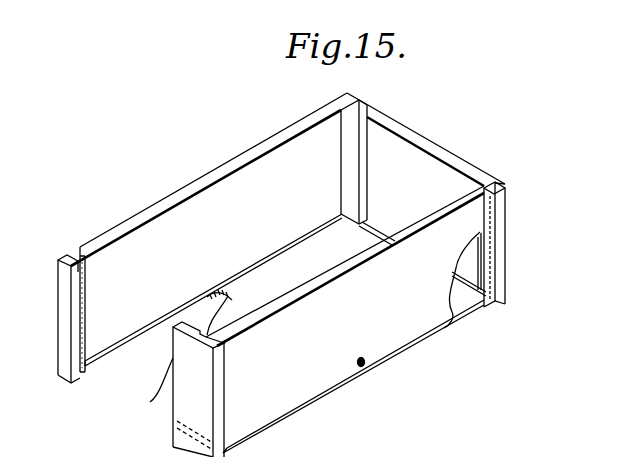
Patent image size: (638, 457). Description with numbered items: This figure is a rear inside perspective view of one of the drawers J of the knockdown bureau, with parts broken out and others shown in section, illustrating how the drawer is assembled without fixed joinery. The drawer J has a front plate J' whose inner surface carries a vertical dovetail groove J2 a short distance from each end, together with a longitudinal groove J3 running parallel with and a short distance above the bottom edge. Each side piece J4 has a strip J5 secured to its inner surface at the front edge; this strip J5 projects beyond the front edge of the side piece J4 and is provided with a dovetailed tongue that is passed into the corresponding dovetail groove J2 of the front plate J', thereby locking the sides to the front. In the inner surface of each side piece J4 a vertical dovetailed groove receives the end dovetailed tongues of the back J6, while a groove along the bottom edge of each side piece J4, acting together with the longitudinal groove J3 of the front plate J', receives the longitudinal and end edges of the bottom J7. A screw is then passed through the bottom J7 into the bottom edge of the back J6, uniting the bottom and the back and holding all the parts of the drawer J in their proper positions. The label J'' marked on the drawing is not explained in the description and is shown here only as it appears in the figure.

The drawer J is at (426, 139).
The front plate J' is at (298, 191).
The corner post J'' is at (491, 244).
The vertical dovetail groove J2 is at (76, 258).
The longitudinal groove J3 is at (271, 258).
The side piece J4 is at (315, 316).
The strip J5 is at (359, 113).
The back J6 is at (345, 266).
The bottom J7 is at (457, 320).